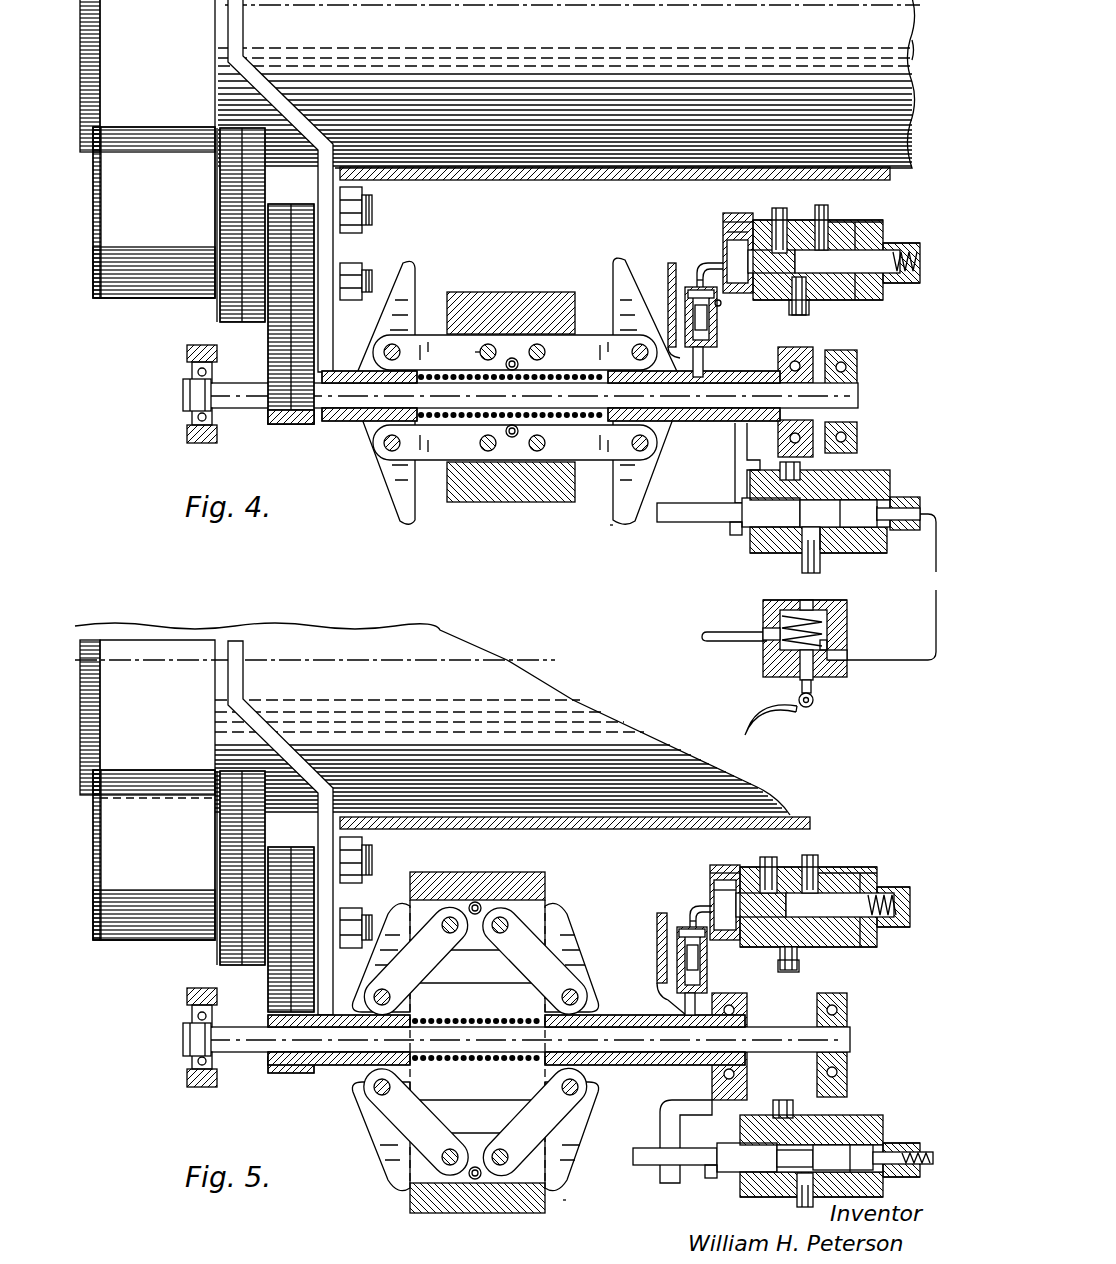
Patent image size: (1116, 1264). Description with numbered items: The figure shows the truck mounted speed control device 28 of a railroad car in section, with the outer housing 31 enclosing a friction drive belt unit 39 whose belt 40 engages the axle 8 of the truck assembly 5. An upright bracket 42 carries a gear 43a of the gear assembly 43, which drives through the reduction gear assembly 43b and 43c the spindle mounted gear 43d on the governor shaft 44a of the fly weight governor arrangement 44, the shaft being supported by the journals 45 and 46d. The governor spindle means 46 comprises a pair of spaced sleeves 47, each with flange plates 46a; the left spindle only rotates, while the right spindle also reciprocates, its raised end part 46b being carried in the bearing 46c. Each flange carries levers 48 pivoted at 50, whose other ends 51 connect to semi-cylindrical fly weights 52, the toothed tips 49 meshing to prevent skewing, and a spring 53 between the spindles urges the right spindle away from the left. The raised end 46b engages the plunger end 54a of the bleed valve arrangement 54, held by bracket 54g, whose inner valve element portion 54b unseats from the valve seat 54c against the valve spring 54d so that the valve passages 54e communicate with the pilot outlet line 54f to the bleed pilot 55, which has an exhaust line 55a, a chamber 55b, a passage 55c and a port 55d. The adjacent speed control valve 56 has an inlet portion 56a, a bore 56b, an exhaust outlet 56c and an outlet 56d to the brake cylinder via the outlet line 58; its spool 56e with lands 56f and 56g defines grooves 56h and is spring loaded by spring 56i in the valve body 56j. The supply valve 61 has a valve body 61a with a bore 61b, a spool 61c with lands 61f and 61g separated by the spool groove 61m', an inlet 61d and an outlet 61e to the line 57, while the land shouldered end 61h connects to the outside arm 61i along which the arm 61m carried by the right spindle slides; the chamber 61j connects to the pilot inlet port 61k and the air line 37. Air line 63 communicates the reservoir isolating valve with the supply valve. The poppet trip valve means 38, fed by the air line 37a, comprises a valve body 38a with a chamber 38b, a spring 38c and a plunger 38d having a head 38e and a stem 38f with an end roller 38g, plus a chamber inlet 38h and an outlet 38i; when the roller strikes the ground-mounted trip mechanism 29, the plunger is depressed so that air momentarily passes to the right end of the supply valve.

In FIG. 4, the truck assembly 5 is at (934, 61).
In FIG. 4, the axle 8 is at (497, 31).
In FIG. 5, the axle 8 is at (432, 719).
In FIG. 4, the truck mounted speed control device 28 is at (581, 554).
In FIG. 5, the truck mounted speed control device 28 is at (569, 1206).
In FIG. 4, the trip mechanism 29 is at (751, 715).
In FIG. 4, the outer housing 31 is at (567, 181).
In FIG. 5, the outer housing 31 is at (587, 830).
In FIG. 4, the air line 37 is at (935, 619).
In FIG. 5, the air line 37 is at (935, 1152).
In FIG. 4, the air line 37a is at (705, 641).
In FIG. 4, the poppet trip valve means 38 is at (793, 651).
In FIG. 4, the valve body 38a is at (766, 600).
In FIG. 4, the chamber 38b is at (808, 605).
In FIG. 4, the spring 38c is at (785, 618).
In FIG. 4, the plunger 38d is at (800, 658).
In FIG. 4, the head 38e is at (829, 645).
In FIG. 4, the stem 38f is at (802, 685).
In FIG. 4, the end roller 38g is at (813, 703).
In FIG. 4, the chamber inlet 38h is at (766, 622).
In FIG. 4, the outlet 38i is at (847, 655).
In FIG. 4, the friction drive belt unit 39 is at (112, 309).
In FIG. 5, the friction drive belt unit 39 is at (124, 950).
In FIG. 4, the belt 40 is at (163, 120).
In FIG. 5, the belt 40 is at (163, 762).
In FIG. 4, the upright bracket 42 is at (282, 100).
In FIG. 5, the upright bracket 42 is at (272, 745).
In FIG. 4, the gear assembly 43 is at (286, 295).
In FIG. 5, the gear assembly 43 is at (250, 949).
In FIG. 4, the gear 43a is at (243, 164).
In FIG. 5, the gear 43a is at (240, 810).
In FIG. 4, the reduction gear 43b is at (217, 284).
In FIG. 5, the reduction gear 43b is at (220, 960).
In FIG. 4, the reduction gear 43c is at (305, 250).
In FIG. 5, the reduction gear 43c is at (288, 853).
In FIG. 4, the spindle mounted gear 43d is at (288, 426).
In FIG. 5, the spindle mounted gear 43d is at (305, 1075).
In FIG. 4, the fly weight governor arrangement 44 is at (564, 392).
In FIG. 5, the fly weight governor arrangement 44 is at (506, 1041).
In FIG. 4, the governor shaft 44a is at (385, 399).
In FIG. 5, the governor shaft 44a is at (243, 1053).
In FIG. 4, the journal 45 is at (183, 434).
In FIG. 5, the journal 45 is at (183, 1080).
In FIG. 4, the governor spindle means 46 is at (617, 396).
In FIG. 5, the governor spindle means 46 is at (611, 1053).
In FIG. 4, the governor spindle flange means 46a is at (517, 396).
In FIG. 5, the governor spindle flange means 46a is at (467, 1053).
In FIG. 4, the raised end part 46b is at (766, 410).
In FIG. 5, the raised end part 46b is at (690, 1084).
In FIG. 4, the bearing 46c is at (816, 441).
In FIG. 5, the bearing 46c is at (750, 1098).
In FIG. 4, the journal 46d is at (858, 362).
In FIG. 5, the journal 46d is at (848, 1088).
In FIG. 4, the governor spindle 47 is at (418, 276).
In FIG. 5, the governor spindle 47 is at (392, 916).
In FIG. 4, the lever 48 is at (438, 335).
In FIG. 5, the lever 48 is at (440, 958).
In FIG. 4, the toothed tip 49 is at (514, 357).
In FIG. 5, the toothed tip 49 is at (478, 901).
In FIG. 4, the pivot connection 50 is at (384, 348).
In FIG. 5, the pivot connection 50 is at (372, 994).
In FIG. 4, the pivot end 51 is at (489, 344).
In FIG. 5, the pivot end 51 is at (451, 916).
In FIG. 4, the governor fly weight 52 is at (518, 292).
In FIG. 5, the governor fly weight 52 is at (414, 874).
In FIG. 4, the spring 53 is at (462, 356).
In FIG. 5, the spring 53 is at (477, 1041).
In FIG. 4, the bleed valve arrangement 54 is at (680, 280).
In FIG. 5, the bleed valve arrangement 54 is at (668, 947).
In FIG. 4, the plunger end 54a is at (704, 366).
In FIG. 5, the plunger end 54a is at (685, 1005).
In FIG. 4, the inner valve element portion 54b is at (708, 322).
In FIG. 5, the inner valve element portion 54b is at (686, 958).
In FIG. 4, the valve seat 54c is at (700, 305).
In FIG. 4, the valve spring 54d is at (714, 306).
In FIG. 5, the valve spring 54d is at (684, 930).
In FIG. 4, the valve passage 54e is at (700, 258).
In FIG. 5, the valve passage 54e is at (722, 866).
In FIG. 4, the valve pilot cylinder outlet line 54f is at (696, 278).
In FIG. 5, the valve pilot cylinder outlet line 54f is at (690, 915).
In FIG. 4, the bracket 54g is at (668, 282).
In FIG. 5, the bracket 54g is at (657, 922).
In FIG. 4, the bleed pilot 55 is at (741, 207).
In FIG. 5, the bleed pilot 55 is at (722, 911).
In FIG. 4, the exhaust line 55a is at (728, 245).
In FIG. 5, the exhaust line 55a is at (714, 886).
In FIG. 4, the chamber 55b is at (771, 261).
In FIG. 5, the chamber 55b is at (752, 918).
In FIG. 4, the passage 55c is at (737, 220).
In FIG. 5, the passage 55c is at (740, 870).
In FIG. 4, the port 55d is at (734, 233).
In FIG. 5, the port 55d is at (697, 894).
In FIG. 4, the speed control valve 56 is at (846, 232).
In FIG. 5, the speed control valve 56 is at (844, 950).
In FIG. 4, the inlet portion 56a is at (790, 218).
In FIG. 5, the valve bore 56b is at (862, 866).
In FIG. 4, the valve outlet 56c is at (832, 218).
In FIG. 5, the valve outlet 56c is at (830, 880).
In FIG. 4, the valve outlet 56d is at (800, 316).
In FIG. 5, the valve outlet 56d is at (812, 866).
In FIG. 4, the spool 56e is at (774, 215).
In FIG. 5, the spool 56e is at (896, 887).
In FIG. 4, the land 56f is at (826, 201).
In FIG. 5, the land 56f is at (790, 950).
In FIG. 4, the land 56g is at (868, 240).
In FIG. 5, the land 56g is at (880, 882).
In FIG. 4, the groove 56h is at (862, 301).
In FIG. 5, the groove 56h is at (845, 867).
In FIG. 4, the spring 56i is at (912, 250).
In FIG. 5, the spring 56i is at (905, 908).
In FIG. 4, the valve body 56j is at (888, 243).
In FIG. 5, the valve body 56j is at (908, 895).
In FIG. 4, the line 57 is at (778, 207).
In FIG. 5, the line 57 is at (778, 856).
In FIG. 4, the speed control valve outlet line 58 is at (809, 308).
In FIG. 5, the speed control valve outlet line 58 is at (790, 973).
In FIG. 4, the supply valve 61 is at (798, 361).
In FIG. 5, the supply valve 61 is at (777, 1160).
In FIG. 4, the valve body 61a is at (880, 555).
In FIG. 5, the valve body 61a is at (748, 1198).
In FIG. 4, the bore 61b is at (752, 486).
In FIG. 5, the bore 61b is at (748, 1130).
In FIG. 4, the spool 61c is at (752, 548).
In FIG. 5, the spool 61c is at (742, 1185).
In FIG. 4, the inlet 61d is at (802, 560).
In FIG. 5, the inlet 61d is at (798, 1205).
In FIG. 5, the outlet 61e is at (800, 1150).
In FIG. 4, the spool land 61f is at (771, 512).
In FIG. 5, the spool land 61f is at (747, 1157).
In FIG. 4, the spool land 61g is at (870, 528).
In FIG. 4, the shouldered end 61h is at (736, 536).
In FIG. 5, the shouldered end 61h is at (712, 1164).
In FIG. 4, the outside arm 61i is at (680, 523).
In FIG. 5, the outside arm 61i is at (642, 1166).
In FIG. 4, the chamber 61j is at (880, 506).
In FIG. 5, the chamber 61j is at (890, 1142).
In FIG. 5, the pilot inlet port 61k is at (905, 1168).
In FIG. 4, the arm 61m is at (726, 463).
In FIG. 5, the arm 61m is at (665, 1141).
In FIG. 4, the spool groove 61m' is at (843, 553).
In FIG. 5, the spool groove 61m' is at (864, 1134).
In FIG. 4, the air line 63 is at (850, 528).
In FIG. 5, the air line 63 is at (843, 1158).